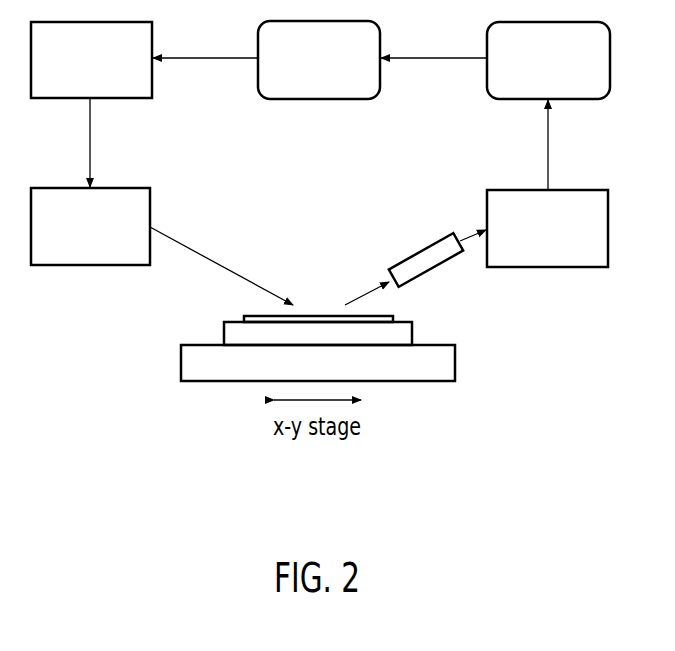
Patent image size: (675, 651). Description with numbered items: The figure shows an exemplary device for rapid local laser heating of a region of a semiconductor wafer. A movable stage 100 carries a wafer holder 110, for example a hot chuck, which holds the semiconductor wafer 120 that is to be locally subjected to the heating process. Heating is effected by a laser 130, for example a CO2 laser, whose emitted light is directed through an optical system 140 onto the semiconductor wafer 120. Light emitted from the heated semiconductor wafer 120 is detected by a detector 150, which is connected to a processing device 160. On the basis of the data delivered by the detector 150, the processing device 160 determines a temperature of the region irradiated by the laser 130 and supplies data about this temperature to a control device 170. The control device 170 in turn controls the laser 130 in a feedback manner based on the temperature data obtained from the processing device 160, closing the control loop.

The movable stage 100 is at (455, 359).
The wafer holder 110 is at (413, 329).
The semiconductor wafer 120 is at (393, 313).
The laser 130 is at (71, 72).
The optical system 140 is at (71, 240).
The detector 150 is at (529, 243).
The processing device 160 is at (529, 72).
The control device 170 is at (300, 72).